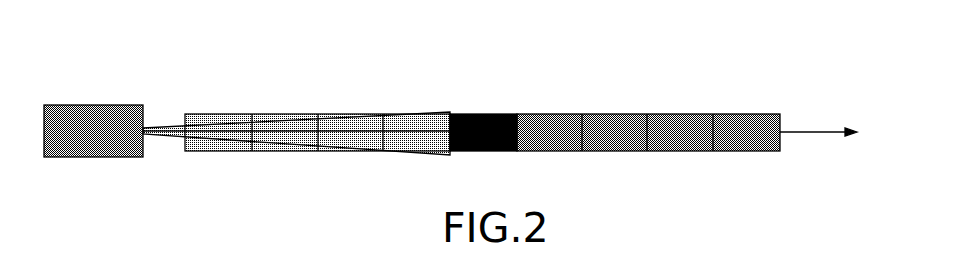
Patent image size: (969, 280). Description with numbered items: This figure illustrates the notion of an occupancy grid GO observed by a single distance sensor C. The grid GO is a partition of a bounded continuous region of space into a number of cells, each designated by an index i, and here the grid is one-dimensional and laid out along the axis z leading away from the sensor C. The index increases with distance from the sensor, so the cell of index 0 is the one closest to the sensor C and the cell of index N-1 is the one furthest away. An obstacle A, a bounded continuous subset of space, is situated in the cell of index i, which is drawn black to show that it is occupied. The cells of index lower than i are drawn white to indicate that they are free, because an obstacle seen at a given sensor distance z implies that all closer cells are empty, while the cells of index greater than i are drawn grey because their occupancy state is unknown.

The distance sensor C is at (100, 105).
The obstacle A is at (478, 113).
The occupancy grid GO is at (522, 88).
The sensor distance z is at (829, 133).
The index of the cell closest to the sensor 0 is at (317, 153).
The cell index i is at (483, 151).
The index of the cell furthest from the sensor N-1 is at (648, 150).